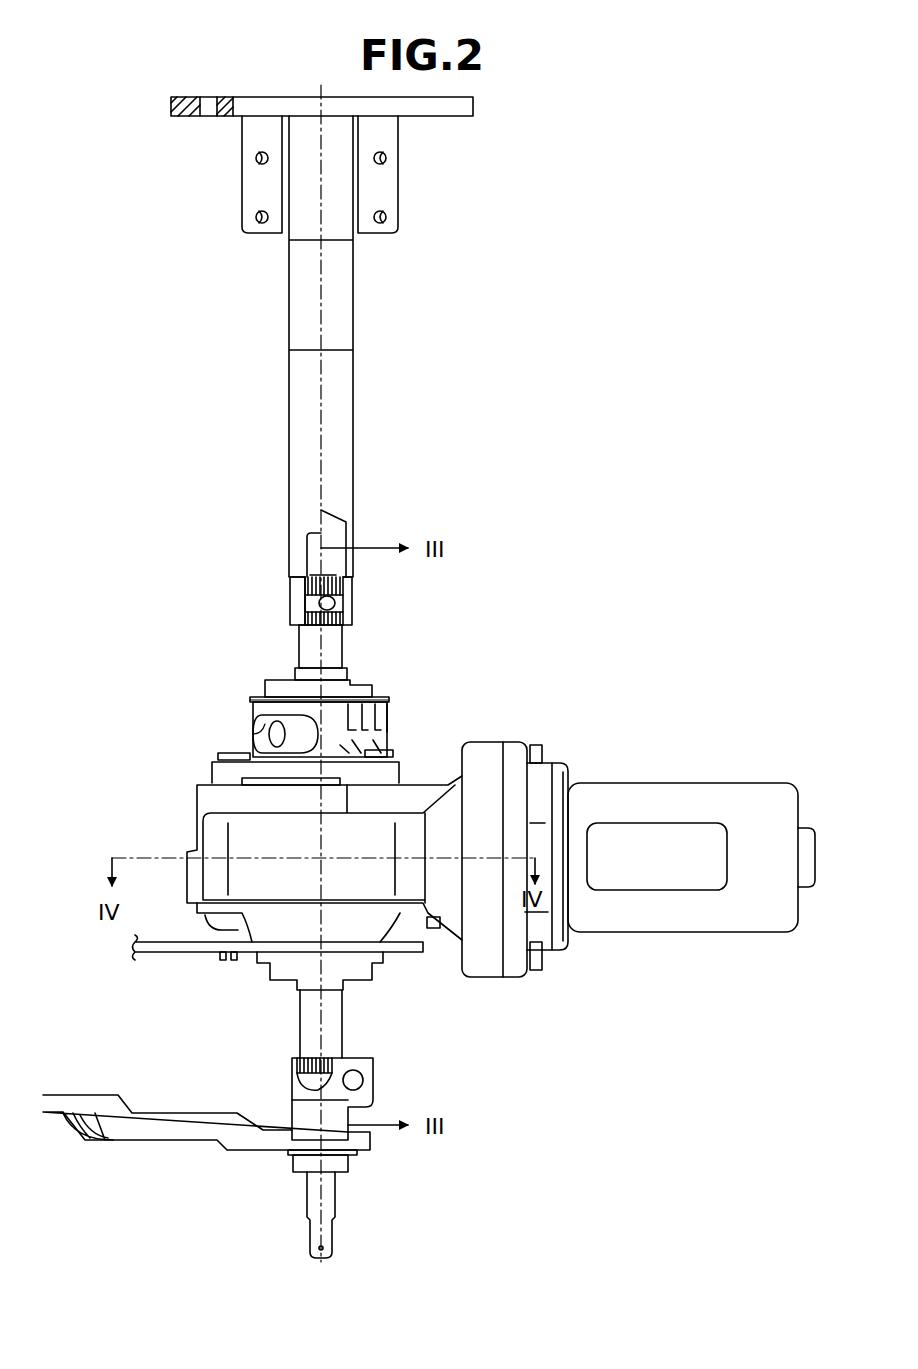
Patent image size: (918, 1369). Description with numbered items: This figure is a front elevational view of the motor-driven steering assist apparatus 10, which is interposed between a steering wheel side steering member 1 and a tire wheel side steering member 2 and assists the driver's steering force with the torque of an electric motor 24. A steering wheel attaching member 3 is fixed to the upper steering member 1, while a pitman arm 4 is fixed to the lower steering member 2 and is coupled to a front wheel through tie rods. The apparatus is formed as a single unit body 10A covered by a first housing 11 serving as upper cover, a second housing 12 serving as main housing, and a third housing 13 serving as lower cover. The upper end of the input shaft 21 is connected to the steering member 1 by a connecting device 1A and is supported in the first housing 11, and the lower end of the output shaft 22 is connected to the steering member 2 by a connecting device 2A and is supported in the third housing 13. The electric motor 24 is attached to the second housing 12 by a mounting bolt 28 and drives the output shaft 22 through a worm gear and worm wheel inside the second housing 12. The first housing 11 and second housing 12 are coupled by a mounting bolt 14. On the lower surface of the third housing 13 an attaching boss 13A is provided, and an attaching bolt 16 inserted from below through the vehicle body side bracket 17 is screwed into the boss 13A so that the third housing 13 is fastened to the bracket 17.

The steering wheel side steering member 1 is at (297, 398).
The connecting device 1A is at (291, 591).
The tire wheel side steering member 2 is at (312, 1195).
The connecting device 2A is at (293, 1097).
The steering wheel attaching member 3 is at (176, 100).
The pitman arm 4 is at (155, 1135).
The motor-driven steering assist apparatus 10 is at (190, 662).
The unit body 10A is at (435, 730).
The first housing 11 is at (255, 729).
The second housing 12 is at (200, 792).
The third housing 13 is at (262, 962).
The attaching boss 13A is at (222, 930).
The mounting bolt 14 is at (228, 751).
The attaching bolt 16 is at (228, 962).
The vehicle body side bracket 17 is at (157, 953).
The input shaft 21 is at (300, 647).
The output shaft 22 is at (300, 1033).
The electric motor 24 is at (748, 783).
The mounting bolt 28 is at (536, 978).